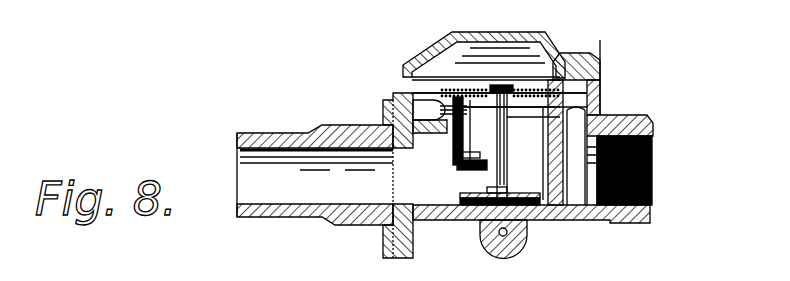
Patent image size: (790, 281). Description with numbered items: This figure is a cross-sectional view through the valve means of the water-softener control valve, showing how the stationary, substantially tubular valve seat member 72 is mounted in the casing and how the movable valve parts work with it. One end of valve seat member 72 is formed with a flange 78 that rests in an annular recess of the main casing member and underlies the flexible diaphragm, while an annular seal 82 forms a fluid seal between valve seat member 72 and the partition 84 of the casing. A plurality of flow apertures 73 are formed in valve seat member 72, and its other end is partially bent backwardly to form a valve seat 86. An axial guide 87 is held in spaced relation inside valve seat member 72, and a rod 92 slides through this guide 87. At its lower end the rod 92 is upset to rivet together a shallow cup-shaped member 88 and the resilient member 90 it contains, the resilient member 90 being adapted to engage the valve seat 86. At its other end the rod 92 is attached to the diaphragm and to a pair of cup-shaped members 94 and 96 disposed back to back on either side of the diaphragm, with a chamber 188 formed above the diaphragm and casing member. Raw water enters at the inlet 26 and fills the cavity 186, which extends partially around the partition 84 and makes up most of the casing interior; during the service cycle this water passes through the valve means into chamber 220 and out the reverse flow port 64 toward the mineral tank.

The chamber 188 is at (497, 66).
The cup-shaped member 94 is at (552, 70).
The cup-shaped member 96 is at (572, 68).
The partition 84 is at (385, 115).
The flange 78 is at (563, 92).
The flow apertures 73 is at (558, 107).
The inlet 26 is at (652, 143).
The annular seal 82 is at (452, 135).
The rod 92 is at (522, 104).
The axial guide 87 is at (507, 145).
The valve seat member 72 is at (561, 142).
The valve seat 86 is at (462, 172).
The cup-shaped member 88 is at (460, 197).
The chamber 220 is at (412, 181).
The reverse flow port 64 is at (257, 185).
The resilient member 90 is at (482, 220).
The cavity 186 is at (575, 192).